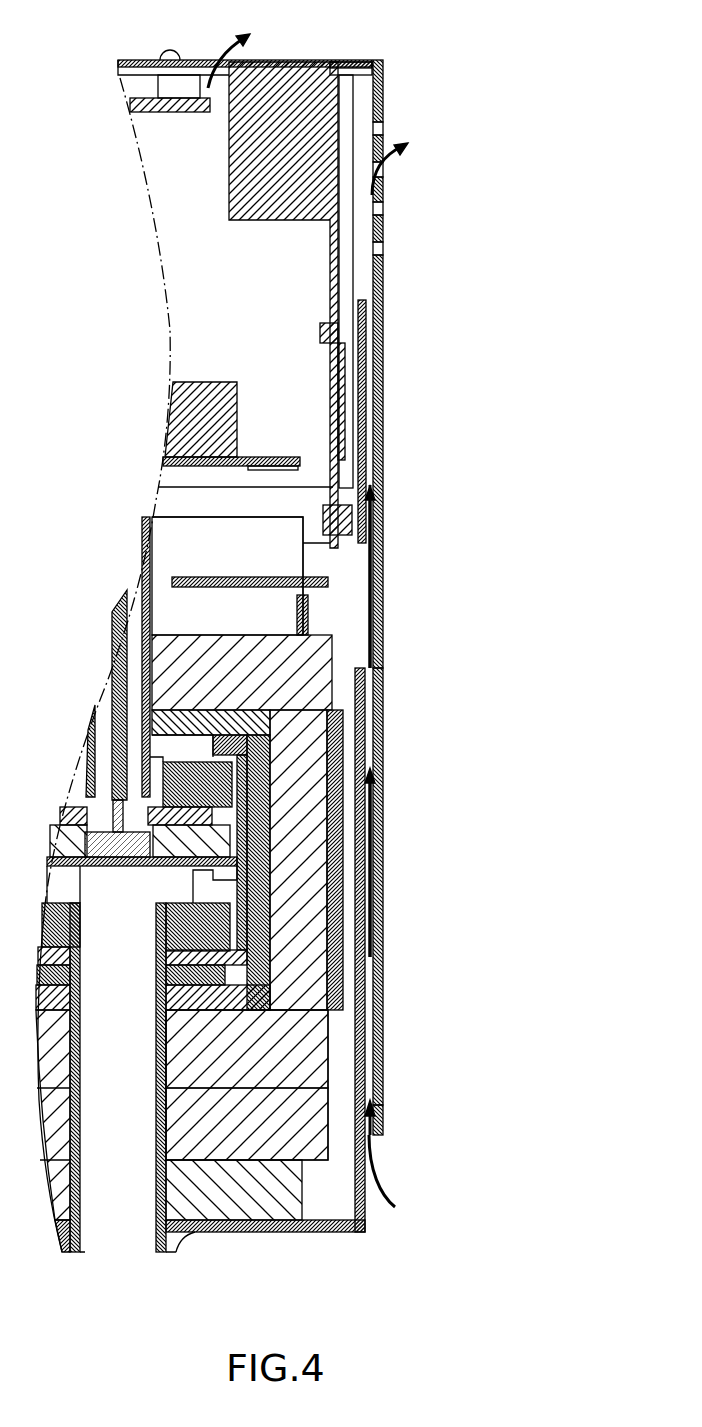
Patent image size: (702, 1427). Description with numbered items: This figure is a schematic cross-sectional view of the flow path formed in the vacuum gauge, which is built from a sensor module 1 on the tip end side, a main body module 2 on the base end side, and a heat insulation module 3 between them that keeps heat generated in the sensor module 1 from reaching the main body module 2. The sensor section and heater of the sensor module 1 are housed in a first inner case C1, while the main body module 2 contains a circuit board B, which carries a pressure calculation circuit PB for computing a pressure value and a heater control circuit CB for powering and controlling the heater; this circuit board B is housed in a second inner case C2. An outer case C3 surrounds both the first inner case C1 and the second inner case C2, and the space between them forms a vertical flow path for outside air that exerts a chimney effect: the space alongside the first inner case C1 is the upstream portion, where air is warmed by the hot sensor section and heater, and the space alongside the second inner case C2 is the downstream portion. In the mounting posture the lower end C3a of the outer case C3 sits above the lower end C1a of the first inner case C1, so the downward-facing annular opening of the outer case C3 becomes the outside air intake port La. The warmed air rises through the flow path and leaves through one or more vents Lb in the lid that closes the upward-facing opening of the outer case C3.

The sensor module 1 is at (497, 850).
The main body module 2 is at (497, 201).
The heat insulation module 3 is at (497, 557).
The vent Lb is at (212, 62).
The circuit board B is at (345, 393).
The heater control circuit CB is at (220, 382).
The pressure calculation circuit PB is at (345, 445).
The second inner case C2 is at (368, 432).
The outer case C3 is at (383, 700).
The first inner case C1 is at (366, 740).
The lower end of the outer case C3a is at (383, 1115).
The lower end of the first inner case C1a is at (365, 1210).
The outside air intake port La is at (370, 1138).